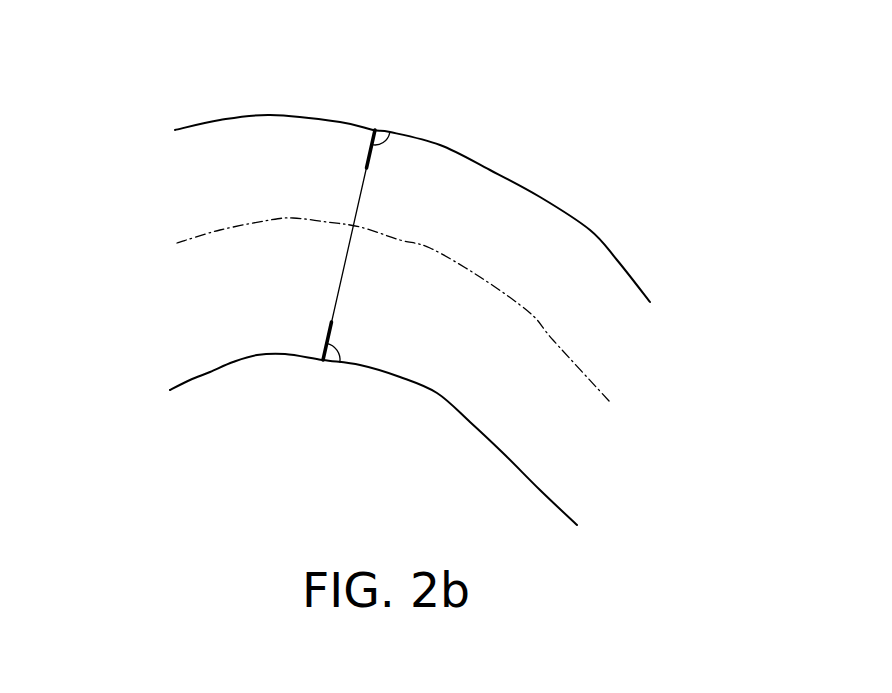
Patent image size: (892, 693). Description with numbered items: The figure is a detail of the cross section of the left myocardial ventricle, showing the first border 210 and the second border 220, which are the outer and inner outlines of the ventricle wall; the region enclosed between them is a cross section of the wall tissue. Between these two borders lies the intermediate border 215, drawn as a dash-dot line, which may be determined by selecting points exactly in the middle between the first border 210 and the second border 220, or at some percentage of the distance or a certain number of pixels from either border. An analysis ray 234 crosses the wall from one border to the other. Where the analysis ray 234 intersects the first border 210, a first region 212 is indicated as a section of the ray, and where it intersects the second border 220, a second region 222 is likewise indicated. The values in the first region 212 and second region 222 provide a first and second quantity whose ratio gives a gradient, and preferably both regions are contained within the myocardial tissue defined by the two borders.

The first border 210 is at (220, 120).
The first region 212 is at (390, 133).
The intermediate border 215 is at (222, 230).
The second border 220 is at (210, 372).
The second region 222 is at (341, 360).
The analysis ray 234 is at (362, 198).